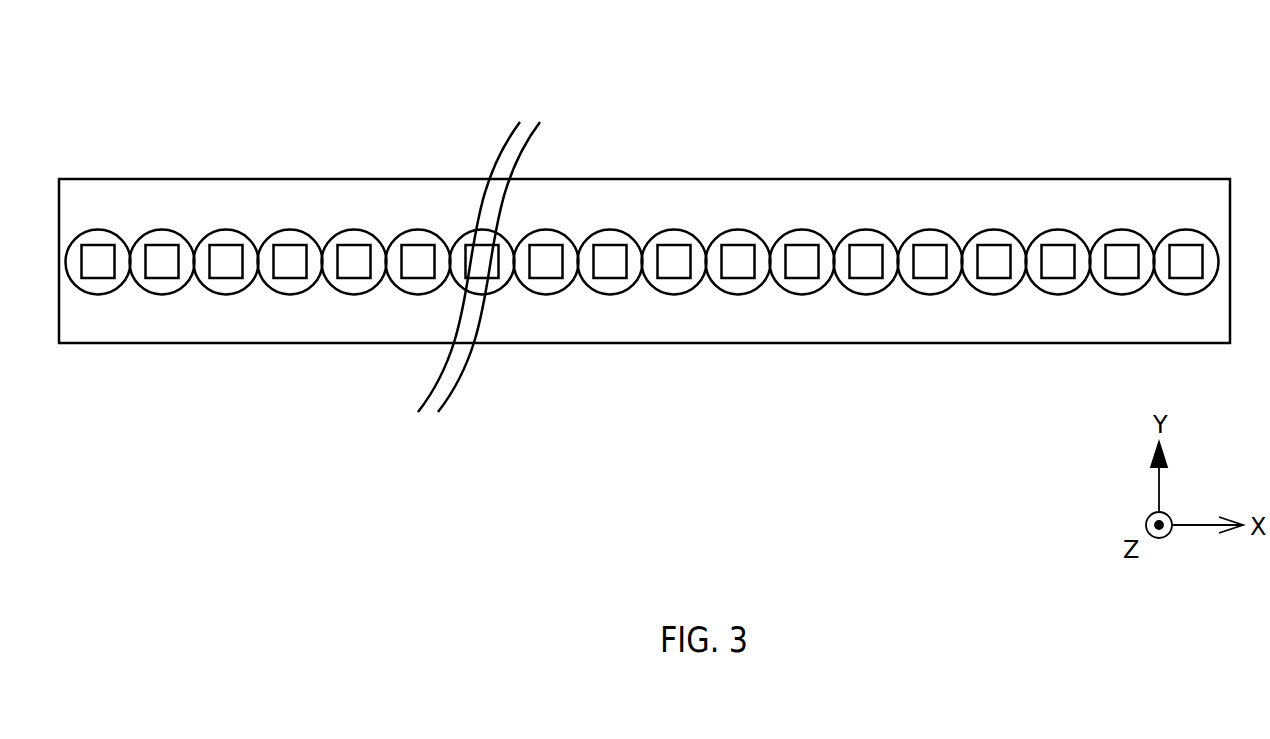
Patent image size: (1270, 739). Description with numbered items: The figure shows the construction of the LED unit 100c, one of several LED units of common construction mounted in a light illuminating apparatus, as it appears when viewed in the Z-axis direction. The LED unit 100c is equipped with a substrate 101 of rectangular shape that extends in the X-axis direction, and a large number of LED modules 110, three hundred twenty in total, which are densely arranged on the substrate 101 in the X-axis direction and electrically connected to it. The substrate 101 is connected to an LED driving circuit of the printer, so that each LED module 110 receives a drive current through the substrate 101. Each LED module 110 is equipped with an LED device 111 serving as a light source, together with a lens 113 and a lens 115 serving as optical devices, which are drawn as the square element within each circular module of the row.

The LED unit 100c is at (1044, 62).
The substrate 101 is at (1090, 178).
The LED module 110 is at (813, 425).
The LED device 111 is at (730, 267).
The lens 113 is at (745, 278).
The lens 115 is at (642, 335).